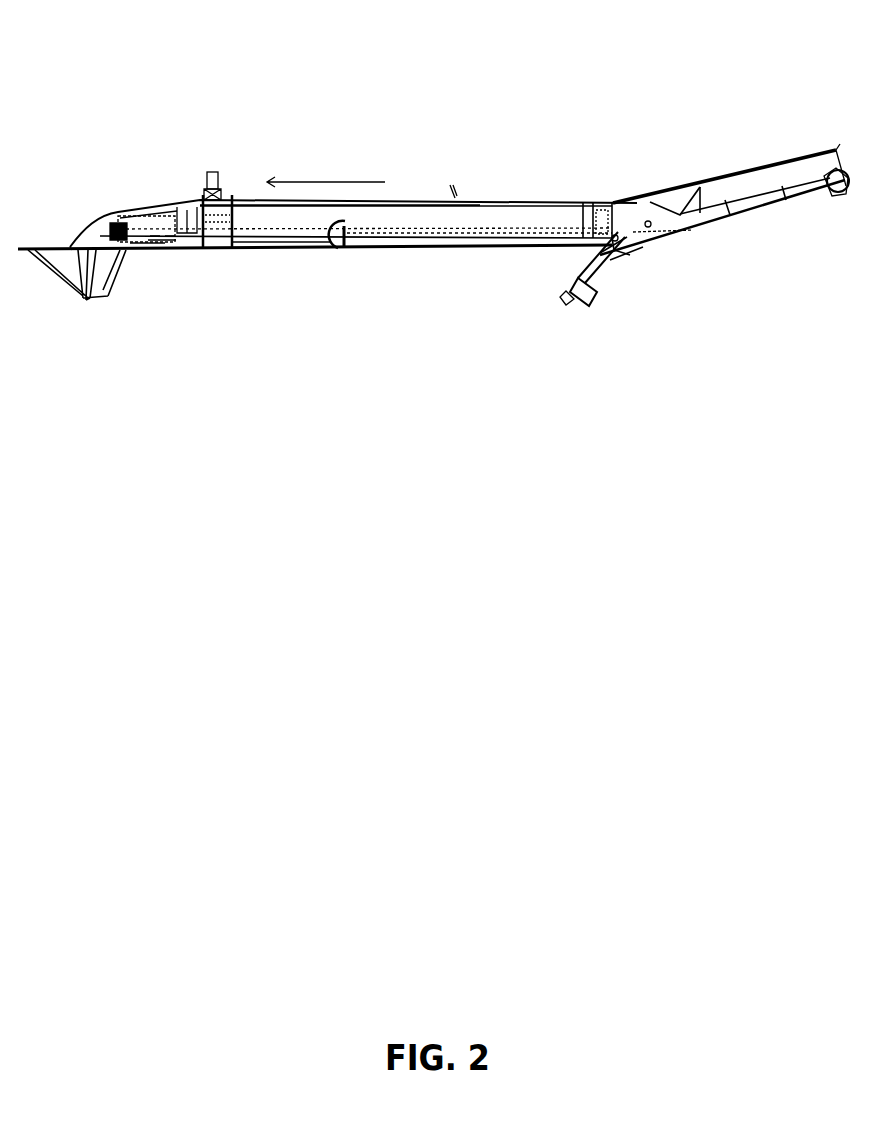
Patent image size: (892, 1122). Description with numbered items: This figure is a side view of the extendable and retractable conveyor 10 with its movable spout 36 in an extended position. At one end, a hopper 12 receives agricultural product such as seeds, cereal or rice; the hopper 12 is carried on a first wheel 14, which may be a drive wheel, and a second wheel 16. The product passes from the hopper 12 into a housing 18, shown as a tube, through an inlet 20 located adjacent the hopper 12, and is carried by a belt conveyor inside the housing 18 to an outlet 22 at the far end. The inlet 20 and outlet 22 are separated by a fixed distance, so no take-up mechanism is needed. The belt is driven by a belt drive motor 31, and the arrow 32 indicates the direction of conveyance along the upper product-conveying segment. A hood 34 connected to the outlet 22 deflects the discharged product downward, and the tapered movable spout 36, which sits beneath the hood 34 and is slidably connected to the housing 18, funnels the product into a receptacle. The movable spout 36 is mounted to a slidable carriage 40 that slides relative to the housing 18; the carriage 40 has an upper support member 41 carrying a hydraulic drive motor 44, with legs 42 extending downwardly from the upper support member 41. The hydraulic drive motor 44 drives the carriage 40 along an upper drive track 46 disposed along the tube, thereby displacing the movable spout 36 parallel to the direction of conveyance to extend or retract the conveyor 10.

The extendable and retractable conveyor 10 is at (486, 129).
The hopper 12 is at (753, 192).
The first wheel 14 is at (578, 307).
The second wheel 16 is at (827, 197).
The housing 18 is at (507, 210).
The inlet 20 is at (645, 200).
The outlet 22 is at (134, 191).
The belt drive motor 31 is at (147, 253).
The direction of conveyance 32 is at (348, 182).
The hood 34 is at (66, 223).
The movable spout 36 is at (53, 277).
The slidable carriage 40 is at (198, 191).
The upper support member 41 is at (227, 200).
The legs 42 is at (232, 216).
The hydraulic drive motor 44 is at (211, 172).
The upper drive track 46 is at (408, 203).